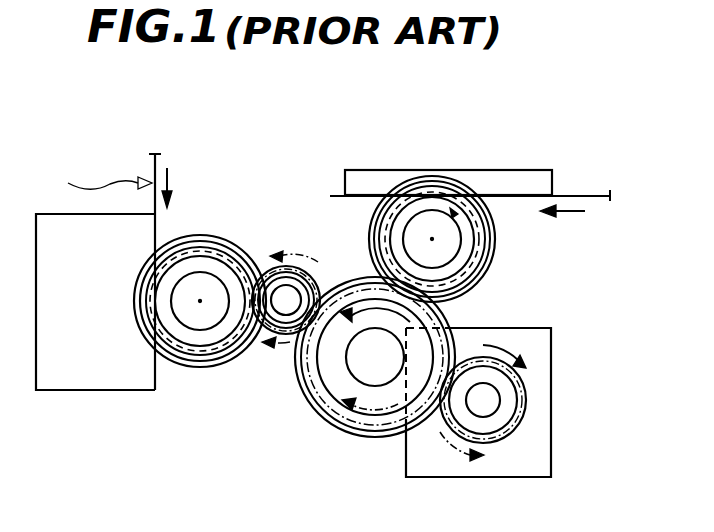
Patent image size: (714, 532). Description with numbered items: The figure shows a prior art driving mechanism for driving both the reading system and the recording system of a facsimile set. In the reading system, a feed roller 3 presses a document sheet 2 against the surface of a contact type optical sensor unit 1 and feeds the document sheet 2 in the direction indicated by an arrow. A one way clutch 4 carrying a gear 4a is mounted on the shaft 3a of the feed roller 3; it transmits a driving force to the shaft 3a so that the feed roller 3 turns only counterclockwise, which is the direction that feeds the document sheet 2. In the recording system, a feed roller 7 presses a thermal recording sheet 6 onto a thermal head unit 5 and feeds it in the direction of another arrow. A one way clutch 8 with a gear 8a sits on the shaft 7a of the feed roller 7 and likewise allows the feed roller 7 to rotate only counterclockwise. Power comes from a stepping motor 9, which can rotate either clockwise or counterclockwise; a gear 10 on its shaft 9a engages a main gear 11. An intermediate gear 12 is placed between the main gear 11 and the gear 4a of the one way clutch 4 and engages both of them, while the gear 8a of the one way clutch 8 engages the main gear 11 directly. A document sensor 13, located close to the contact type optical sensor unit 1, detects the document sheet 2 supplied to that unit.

The contact type optical sensor unit 1 is at (70, 391).
The document sheet 2 is at (157, 210).
The feed roller 3 is at (200, 321).
The shaft 3a is at (216, 282).
The one way clutch 4 is at (212, 368).
The gear 4a is at (173, 358).
The thermal head unit 5 is at (520, 168).
The thermal recording sheet 6 is at (608, 201).
The feed roller 7 is at (425, 240).
The shaft 7a is at (445, 260).
The one way clutch 8 is at (395, 222).
The gear 8a is at (377, 260).
The stepping motor 9 is at (552, 365).
The shaft 9a is at (500, 405).
The gear 10 is at (522, 429).
The main gear 11 is at (375, 438).
The intermediate gear 12 is at (280, 342).
The document sensor 13 is at (97, 169).